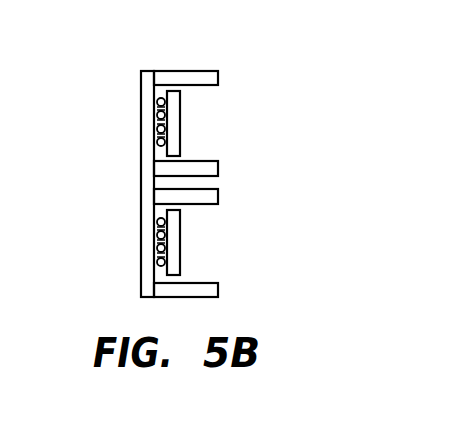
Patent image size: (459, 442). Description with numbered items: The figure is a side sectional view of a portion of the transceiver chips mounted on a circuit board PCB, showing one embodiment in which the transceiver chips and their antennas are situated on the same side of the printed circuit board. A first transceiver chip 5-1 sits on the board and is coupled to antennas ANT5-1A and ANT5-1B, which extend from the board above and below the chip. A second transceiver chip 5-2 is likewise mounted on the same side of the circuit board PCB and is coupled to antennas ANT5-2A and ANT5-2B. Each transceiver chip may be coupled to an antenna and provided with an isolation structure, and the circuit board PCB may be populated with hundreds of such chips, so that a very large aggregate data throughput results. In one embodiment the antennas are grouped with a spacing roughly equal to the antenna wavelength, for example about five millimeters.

The circuit board PCB is at (142, 126).
The antenna ANT5-1A is at (198, 70).
The antenna ANT5-1B is at (212, 170).
The antenna ANT5-2A is at (212, 197).
The antenna ANT5-2B is at (212, 291).
The transceiver chip 5-1 is at (180, 126).
The transceiver chip 5-2 is at (180, 246).